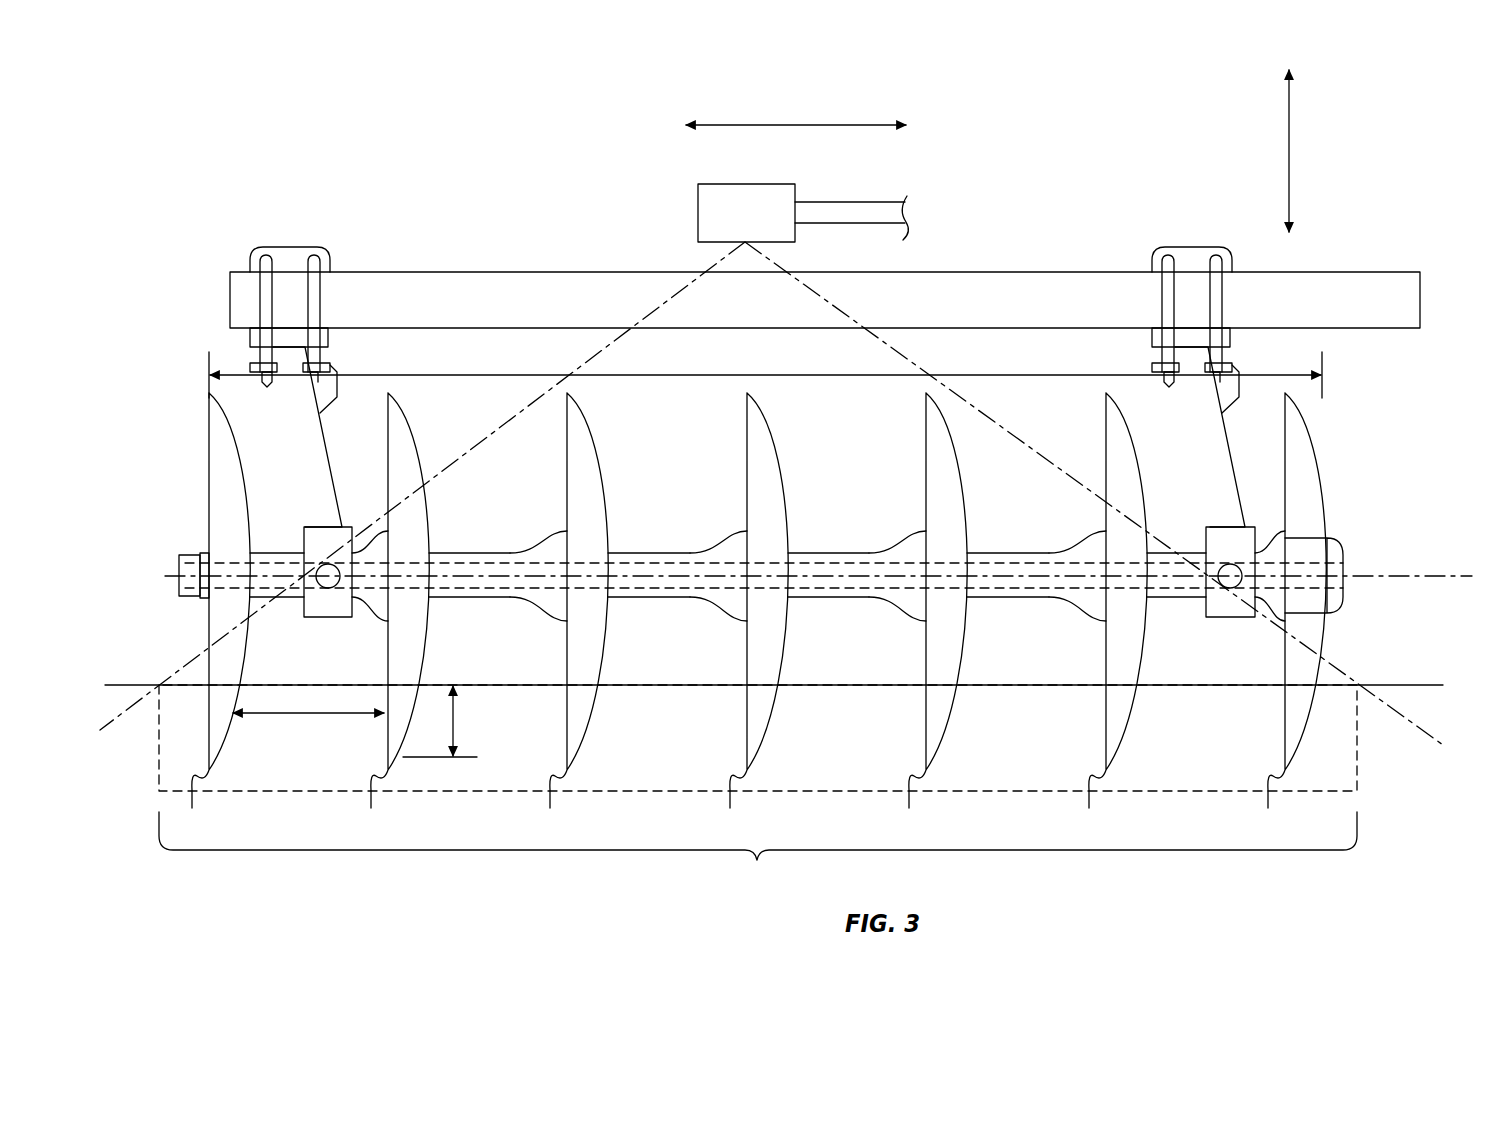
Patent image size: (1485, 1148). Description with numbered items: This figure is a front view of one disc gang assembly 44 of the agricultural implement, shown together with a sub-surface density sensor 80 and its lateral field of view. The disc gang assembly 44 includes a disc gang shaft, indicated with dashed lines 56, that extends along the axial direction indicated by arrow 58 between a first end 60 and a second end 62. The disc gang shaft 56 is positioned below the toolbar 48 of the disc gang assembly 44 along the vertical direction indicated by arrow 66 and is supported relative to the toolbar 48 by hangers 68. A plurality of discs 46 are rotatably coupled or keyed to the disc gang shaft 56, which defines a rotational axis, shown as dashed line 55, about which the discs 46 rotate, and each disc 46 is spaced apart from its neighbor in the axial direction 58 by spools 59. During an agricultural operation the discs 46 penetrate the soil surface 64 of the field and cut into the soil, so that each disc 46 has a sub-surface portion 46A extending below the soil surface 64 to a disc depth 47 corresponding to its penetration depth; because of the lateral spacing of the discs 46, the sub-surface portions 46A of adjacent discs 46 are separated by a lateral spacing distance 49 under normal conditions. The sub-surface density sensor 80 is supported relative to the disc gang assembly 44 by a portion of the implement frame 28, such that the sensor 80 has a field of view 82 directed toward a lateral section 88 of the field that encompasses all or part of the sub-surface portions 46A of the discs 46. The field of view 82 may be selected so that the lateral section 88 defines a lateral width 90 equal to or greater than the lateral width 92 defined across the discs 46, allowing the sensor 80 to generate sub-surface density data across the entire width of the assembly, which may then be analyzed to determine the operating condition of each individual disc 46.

The implement frame 28 is at (863, 212).
The disc gang assembly 44 is at (243, 216).
The disc 46 is at (754, 617).
The sub-surface portion 46A is at (577, 713).
The disc depth 47 is at (455, 722).
The toolbar 48 is at (643, 272).
The lateral spacing distance 49 is at (328, 716).
The rotational axis 55 is at (1425, 576).
The disc gang shaft 56 is at (1172, 597).
The axial direction 58 is at (786, 124).
The spool 59 is at (498, 597).
The first end 60 is at (140, 565).
The second end 62 is at (1358, 558).
The soil surface 64 is at (1413, 685).
The vertical direction 66 is at (1290, 157).
The hanger 68 is at (295, 425).
The sub-surface density sensor 80 is at (698, 205).
The field of view 82 is at (527, 405).
The lateral section 88 is at (1357, 750).
The lateral width 90 is at (757, 860).
The lateral width 92 is at (237, 372).